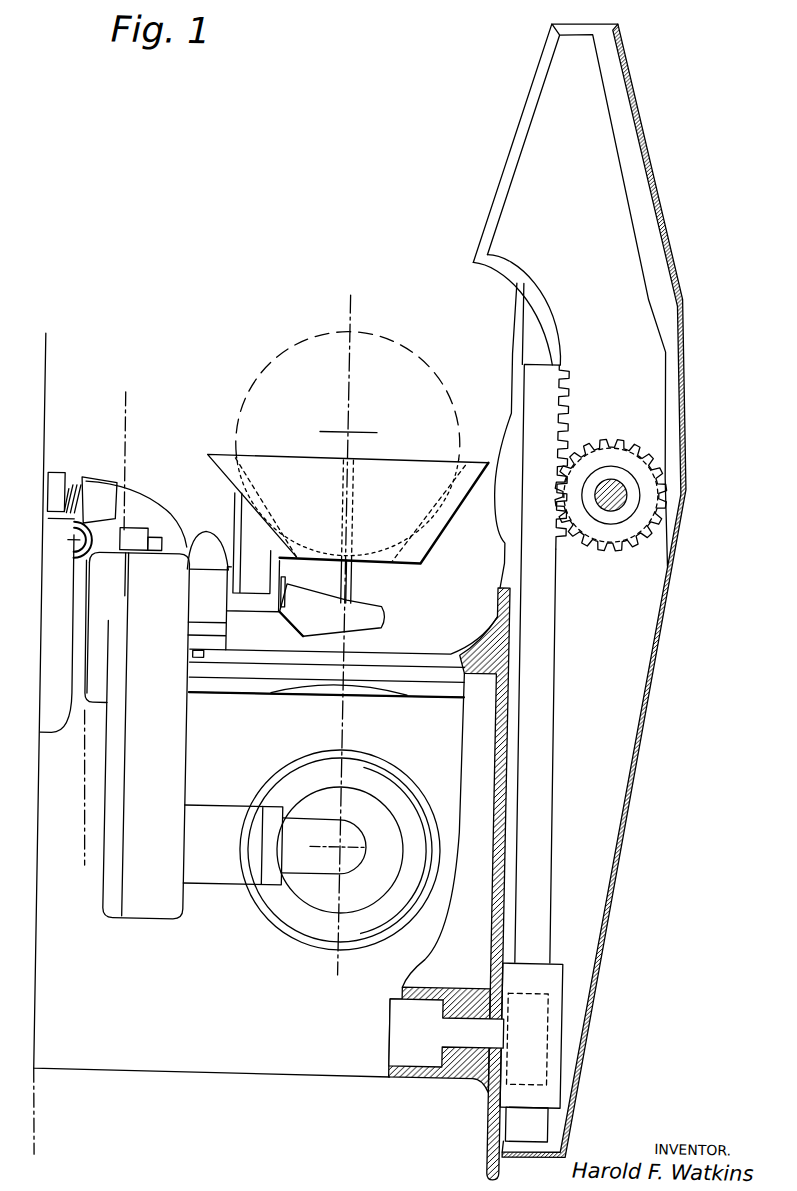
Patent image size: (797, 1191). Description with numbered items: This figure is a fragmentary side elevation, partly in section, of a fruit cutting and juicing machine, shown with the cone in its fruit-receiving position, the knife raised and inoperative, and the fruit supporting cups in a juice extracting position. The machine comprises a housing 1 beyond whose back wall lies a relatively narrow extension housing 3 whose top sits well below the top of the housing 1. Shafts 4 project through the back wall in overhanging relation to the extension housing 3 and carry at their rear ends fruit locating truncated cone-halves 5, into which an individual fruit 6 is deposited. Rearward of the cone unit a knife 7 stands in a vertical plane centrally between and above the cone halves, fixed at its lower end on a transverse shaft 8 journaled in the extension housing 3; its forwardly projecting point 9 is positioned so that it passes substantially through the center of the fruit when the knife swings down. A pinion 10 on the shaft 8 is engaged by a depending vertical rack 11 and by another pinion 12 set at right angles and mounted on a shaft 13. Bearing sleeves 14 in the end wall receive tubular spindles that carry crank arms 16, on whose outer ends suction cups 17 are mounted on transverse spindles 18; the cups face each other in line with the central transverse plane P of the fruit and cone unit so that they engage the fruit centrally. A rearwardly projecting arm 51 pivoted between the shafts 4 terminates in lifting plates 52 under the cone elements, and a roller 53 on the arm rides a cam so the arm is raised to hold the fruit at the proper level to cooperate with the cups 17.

The housing 1 is at (10, 994).
The extension housing 3 is at (203, 1125).
The shafts 4 is at (289, 587).
The truncated cone-halves 5 is at (284, 480).
The fruit 6 is at (288, 341).
The knife 7 is at (547, 168).
The transverse shaft 8 is at (612, 485).
The forwardly projecting point 9 is at (468, 260).
The pinion 10 is at (612, 537).
The vertical rack 11 is at (544, 722).
The pinion 12 is at (559, 1022).
The shaft 13 is at (443, 1027).
The bearing sleeves 14 is at (67, 664).
The crank arms 16 is at (163, 756).
The suction cups 17 is at (307, 916).
The transverse spindles 18 is at (279, 818).
The arm 51 is at (170, 533).
The lifting plates 52 is at (371, 617).
The roller 53 is at (142, 540).
The central transverse plane P is at (347, 715).